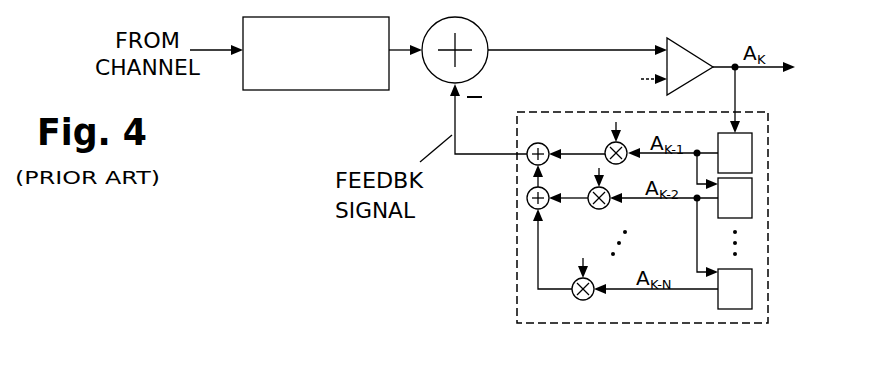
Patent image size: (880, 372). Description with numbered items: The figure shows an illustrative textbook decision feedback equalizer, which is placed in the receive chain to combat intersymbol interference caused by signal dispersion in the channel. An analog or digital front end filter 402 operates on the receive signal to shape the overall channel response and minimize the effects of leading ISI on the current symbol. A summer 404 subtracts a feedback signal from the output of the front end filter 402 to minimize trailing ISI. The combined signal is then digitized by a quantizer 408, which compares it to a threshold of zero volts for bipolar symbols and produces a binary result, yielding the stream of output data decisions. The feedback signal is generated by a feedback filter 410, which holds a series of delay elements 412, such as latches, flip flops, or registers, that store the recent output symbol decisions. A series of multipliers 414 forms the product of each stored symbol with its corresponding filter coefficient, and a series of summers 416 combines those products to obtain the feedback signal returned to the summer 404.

The front end filter 402 is at (296, 90).
The summer 404 is at (436, 80).
The quantizer 408 is at (681, 45).
The feedback filter 410 is at (516, 295).
The delay elements 412 is at (752, 150).
The multipliers 414 is at (621, 165).
The summers 416 is at (527, 160).